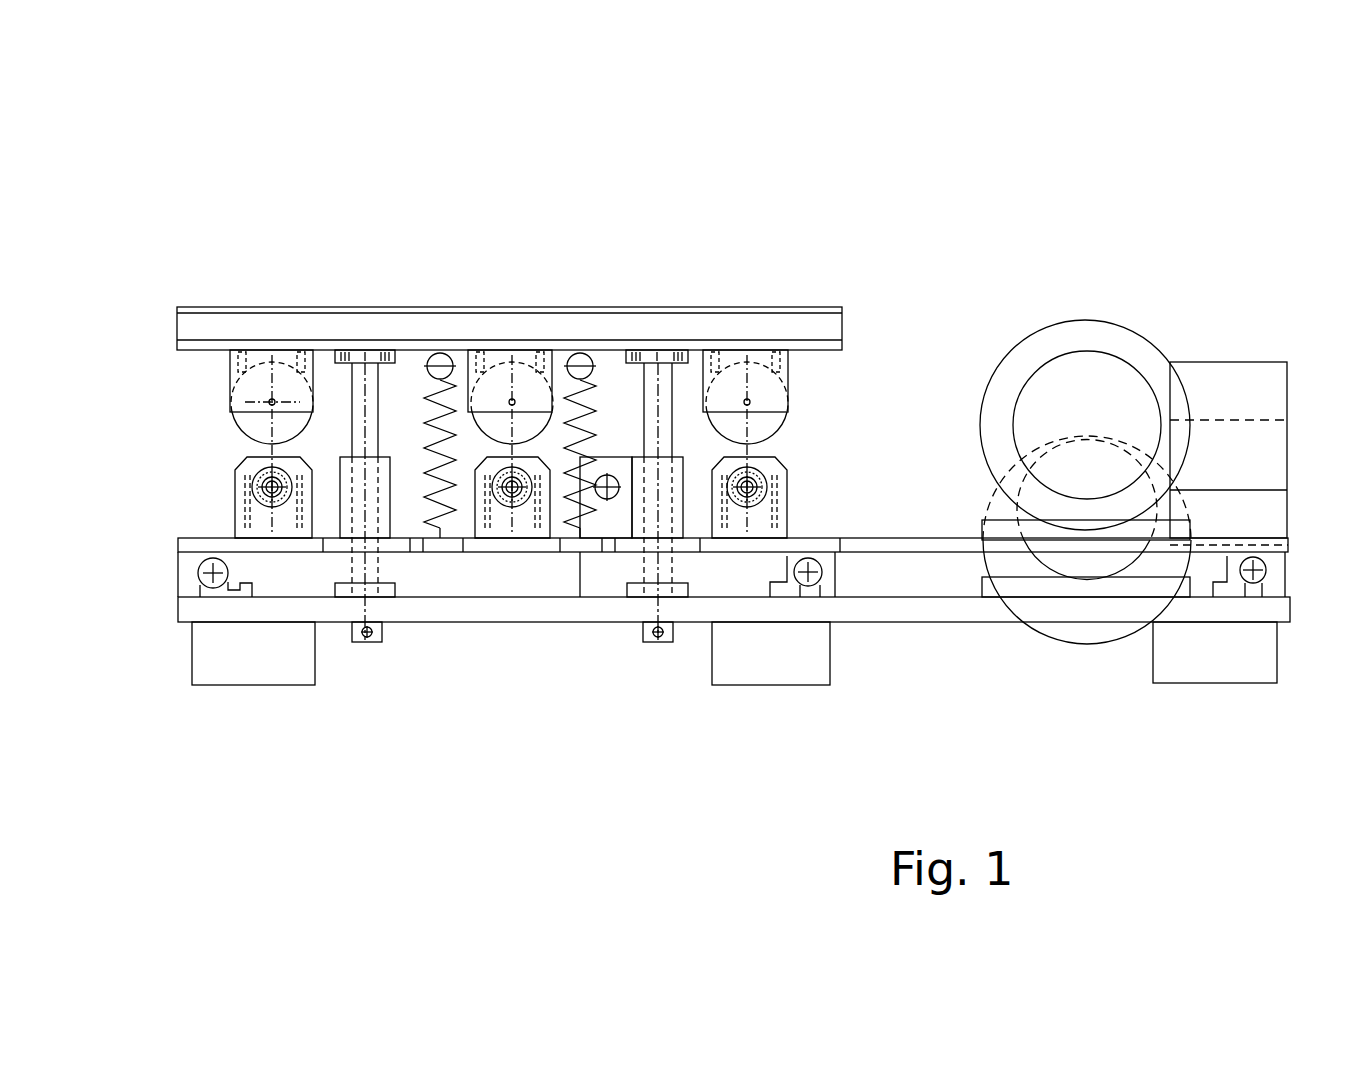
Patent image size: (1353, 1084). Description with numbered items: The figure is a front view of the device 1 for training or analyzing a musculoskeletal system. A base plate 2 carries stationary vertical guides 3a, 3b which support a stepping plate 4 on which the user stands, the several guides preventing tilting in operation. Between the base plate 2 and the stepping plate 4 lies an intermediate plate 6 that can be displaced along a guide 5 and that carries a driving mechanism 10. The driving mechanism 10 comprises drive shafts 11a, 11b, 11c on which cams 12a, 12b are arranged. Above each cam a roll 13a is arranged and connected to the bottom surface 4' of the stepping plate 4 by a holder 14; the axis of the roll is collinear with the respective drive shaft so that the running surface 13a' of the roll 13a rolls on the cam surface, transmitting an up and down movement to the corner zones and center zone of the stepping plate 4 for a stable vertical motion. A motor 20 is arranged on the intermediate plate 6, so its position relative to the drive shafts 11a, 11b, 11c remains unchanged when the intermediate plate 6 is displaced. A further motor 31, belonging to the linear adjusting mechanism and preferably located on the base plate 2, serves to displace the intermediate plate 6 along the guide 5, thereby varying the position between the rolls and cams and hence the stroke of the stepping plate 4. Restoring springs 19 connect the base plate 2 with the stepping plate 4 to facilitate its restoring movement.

The device 1 is at (895, 338).
The base plate 2 is at (497, 610).
The vertical guide 3a is at (343, 575).
The vertical guide 3b is at (628, 582).
The stepping plate 4 is at (509, 282).
The bottom surface 4' is at (509, 525).
The guide 5 is at (198, 573).
The intermediate plate 6 is at (822, 540).
The driving mechanism 10 is at (231, 449).
The drive shaft 11a is at (733, 523).
The drive shaft 11b is at (511, 520).
The drive shaft 11c is at (278, 523).
The cam 12a is at (285, 450).
The cam 12b is at (540, 450).
The roll 13a is at (470, 314).
The running surface 13a' is at (185, 450).
The holder 14 is at (233, 367).
The restoring spring 19 is at (437, 357).
The motor 20 is at (1075, 332).
The motor 31 is at (1090, 397).